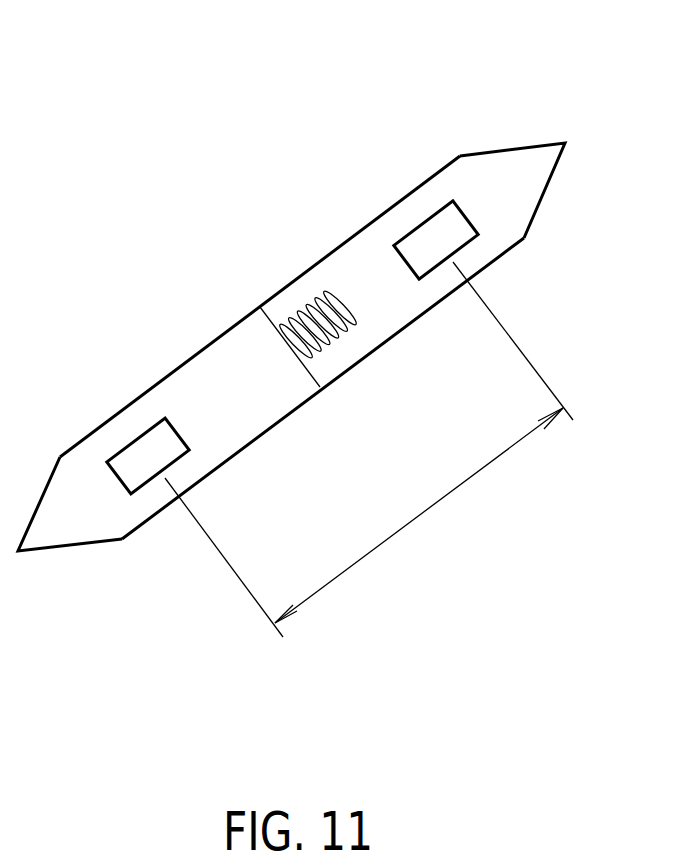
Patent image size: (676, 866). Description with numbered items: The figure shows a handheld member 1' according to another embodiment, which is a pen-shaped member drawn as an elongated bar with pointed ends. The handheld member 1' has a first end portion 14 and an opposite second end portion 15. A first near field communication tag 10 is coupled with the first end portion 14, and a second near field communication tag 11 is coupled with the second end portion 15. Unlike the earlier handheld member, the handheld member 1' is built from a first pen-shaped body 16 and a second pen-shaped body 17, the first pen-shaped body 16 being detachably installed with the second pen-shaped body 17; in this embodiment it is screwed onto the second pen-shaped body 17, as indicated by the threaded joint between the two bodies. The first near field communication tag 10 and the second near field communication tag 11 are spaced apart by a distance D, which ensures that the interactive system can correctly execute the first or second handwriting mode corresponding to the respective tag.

The handheld member 1' is at (328, 330).
The first near field communication tag 10 is at (153, 452).
The second near field communication tag 11 is at (442, 237).
The first end portion 14 is at (70, 518).
The second end portion 15 is at (526, 183).
The first pen-shaped body 16 is at (267, 440).
The second pen-shaped body 17 is at (380, 318).
The distance D is at (369, 449).